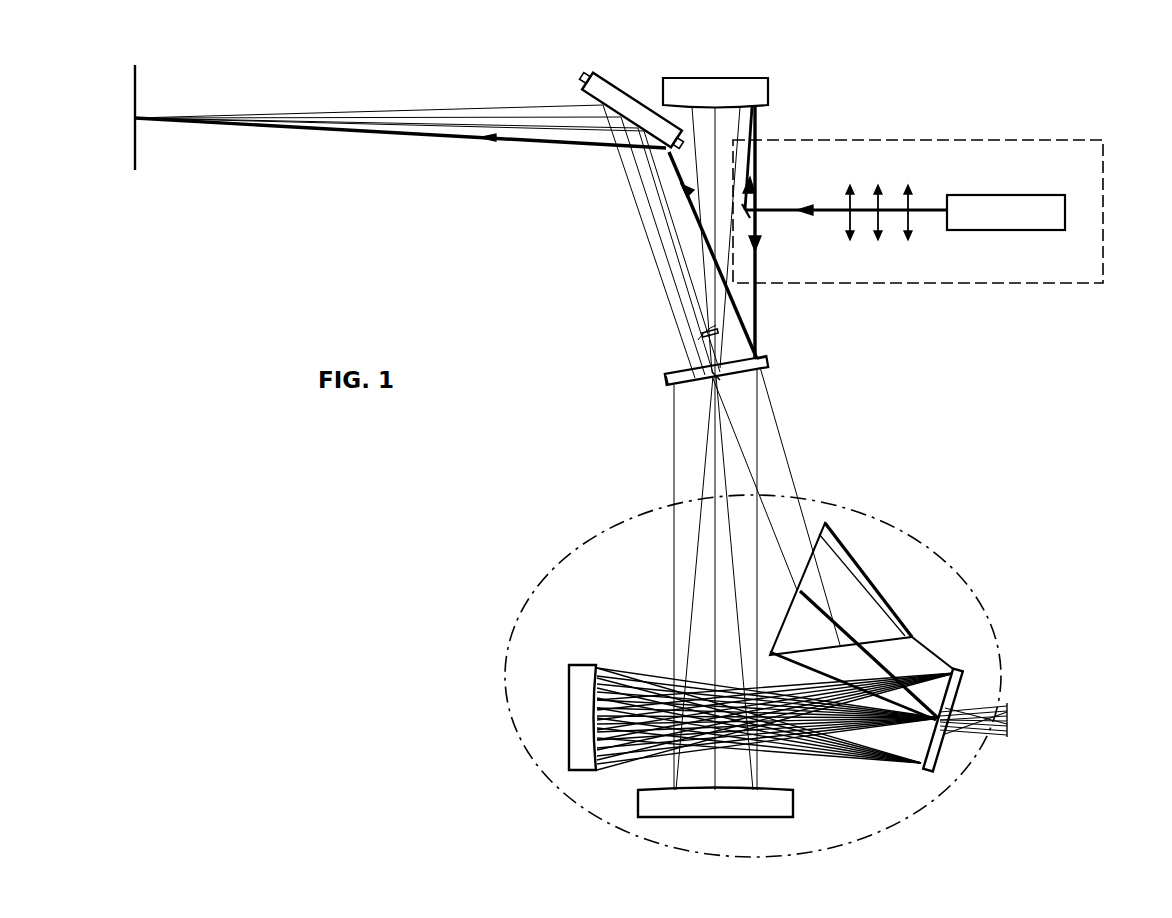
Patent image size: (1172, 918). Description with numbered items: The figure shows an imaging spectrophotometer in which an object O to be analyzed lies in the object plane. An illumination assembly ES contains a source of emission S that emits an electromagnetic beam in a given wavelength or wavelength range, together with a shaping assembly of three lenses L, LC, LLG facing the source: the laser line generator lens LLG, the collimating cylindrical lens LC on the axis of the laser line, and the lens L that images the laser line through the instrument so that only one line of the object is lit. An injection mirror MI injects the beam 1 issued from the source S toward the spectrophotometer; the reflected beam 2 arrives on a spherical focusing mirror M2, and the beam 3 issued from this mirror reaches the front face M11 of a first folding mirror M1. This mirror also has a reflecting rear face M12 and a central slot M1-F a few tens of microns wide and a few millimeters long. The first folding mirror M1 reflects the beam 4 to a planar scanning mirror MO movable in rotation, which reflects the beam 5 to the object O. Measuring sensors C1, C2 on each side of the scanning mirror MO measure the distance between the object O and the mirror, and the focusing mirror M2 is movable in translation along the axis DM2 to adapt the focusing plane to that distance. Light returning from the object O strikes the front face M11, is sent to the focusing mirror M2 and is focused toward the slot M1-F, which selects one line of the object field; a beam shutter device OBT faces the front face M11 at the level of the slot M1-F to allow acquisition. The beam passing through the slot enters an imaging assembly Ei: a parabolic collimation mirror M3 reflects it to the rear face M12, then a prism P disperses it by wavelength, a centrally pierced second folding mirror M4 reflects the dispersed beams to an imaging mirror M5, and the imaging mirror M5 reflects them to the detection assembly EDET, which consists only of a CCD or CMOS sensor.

The object O is at (125, 92).
The beam 5 is at (402, 138).
The beam 4 is at (674, 174).
The beam 3 is at (758, 255).
The beam 2 is at (752, 170).
The beam 1 is at (824, 208).
The planar scanning mirror MO is at (641, 97).
The measuring sensor C1 is at (580, 80).
The measuring sensor C2 is at (670, 152).
The focusing mirror M2 is at (714, 76).
The translation axis of the focusing mirror DM2 is at (778, 52).
The illumination assembly ES is at (1105, 212).
The source of emission S is at (1008, 236).
The lens L is at (848, 200).
The collimating cylindrical lens LC is at (876, 224).
The laser line generator lens LLG is at (904, 200).
The injection mirror MI is at (750, 216).
The first folding mirror M1 is at (774, 363).
The front face of the first folding mirror M11 is at (762, 356).
The rear face of the first folding mirror M12 is at (672, 388).
The slot M1-F is at (720, 378).
The beam shutter device OBT is at (690, 340).
The imaging assembly Ei is at (872, 512).
The prism P is at (874, 574).
The second folding mirror M4 is at (968, 688).
The imaging mirror M5 is at (566, 716).
The parabolic collimation mirror M3 is at (798, 803).
The detection assembly EDET is at (1012, 718).